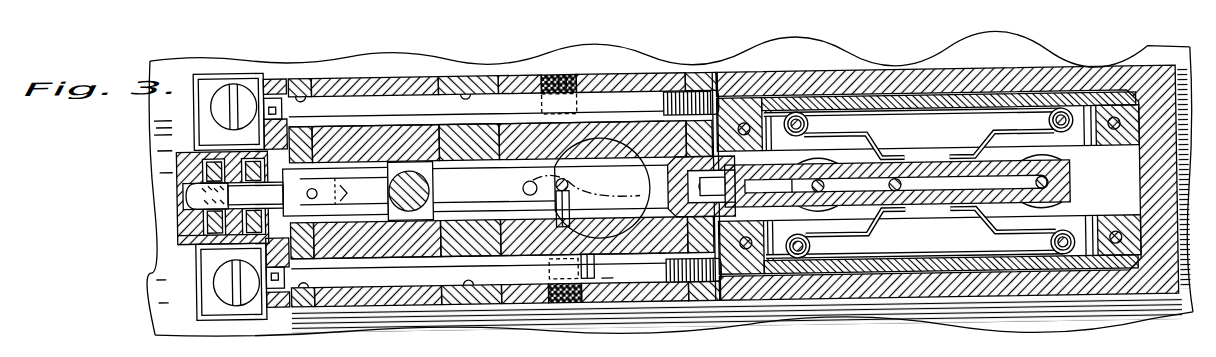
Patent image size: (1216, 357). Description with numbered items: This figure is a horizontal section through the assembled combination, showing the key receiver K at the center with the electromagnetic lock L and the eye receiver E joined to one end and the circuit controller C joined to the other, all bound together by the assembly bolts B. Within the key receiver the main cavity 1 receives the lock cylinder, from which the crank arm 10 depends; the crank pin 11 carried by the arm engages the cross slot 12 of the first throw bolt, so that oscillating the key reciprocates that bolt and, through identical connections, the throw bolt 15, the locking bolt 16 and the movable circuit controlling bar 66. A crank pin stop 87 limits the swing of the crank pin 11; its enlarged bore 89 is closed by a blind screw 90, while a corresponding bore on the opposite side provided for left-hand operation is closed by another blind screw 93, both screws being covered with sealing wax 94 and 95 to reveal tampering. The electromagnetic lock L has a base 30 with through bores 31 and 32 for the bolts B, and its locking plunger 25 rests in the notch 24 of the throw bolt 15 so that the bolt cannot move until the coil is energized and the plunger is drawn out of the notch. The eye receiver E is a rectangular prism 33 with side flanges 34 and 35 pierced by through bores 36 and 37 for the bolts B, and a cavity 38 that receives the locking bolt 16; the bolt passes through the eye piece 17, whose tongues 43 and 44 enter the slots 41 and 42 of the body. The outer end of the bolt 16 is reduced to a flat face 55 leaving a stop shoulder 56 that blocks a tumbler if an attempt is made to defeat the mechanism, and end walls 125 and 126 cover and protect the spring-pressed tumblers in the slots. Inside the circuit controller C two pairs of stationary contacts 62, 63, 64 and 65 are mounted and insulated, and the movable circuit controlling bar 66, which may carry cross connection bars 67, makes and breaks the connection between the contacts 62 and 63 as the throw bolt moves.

The main cavity 1 is at (605, 128).
The crank arm 10 is at (672, 180).
The crank pin 11 is at (527, 188).
The cross slot 12 is at (585, 188).
The throw bolt 15 is at (447, 188).
The throw and locking bolt 16 is at (340, 190).
The eye piece 17 is at (197, 94).
The notch 24 is at (433, 191).
The locking plunger 25 is at (418, 222).
The base 30 is at (366, 78).
The through bore 31 is at (402, 287).
The through bore 32 is at (470, 96).
The rectangular prism body 33 is at (177, 163).
The side flange 34 is at (282, 78).
The side flange 35 is at (262, 322).
The through bore 36 is at (327, 283).
The through bore 37 is at (305, 94).
The cavity 38 is at (193, 193).
The slot 41 is at (182, 240).
The slot 42 is at (255, 233).
The tongue 43 is at (203, 222).
The tongue 44 is at (210, 233).
The flat face 55 is at (210, 160).
The stop shoulder 56 is at (250, 160).
The stationary contact 62 is at (876, 270).
The stationary contact 63 is at (890, 165).
The stationary contact 64 is at (978, 165).
The stationary contact 65 is at (966, 268).
The movable circuit controlling bar 66 is at (1070, 193).
The cross connection bar 67 is at (945, 119).
The crank pin stop 87 is at (606, 302).
The enlarged bore 89 is at (545, 256).
The blind screw 90 is at (612, 306).
The blind screw 93 is at (548, 78).
The sealing wax 94 is at (569, 78).
The sealing wax 95 is at (572, 308).
The end wall 125 is at (203, 76).
The end wall 126 is at (188, 254).
The assembly bolts B is at (400, 107).
The circuit controller C is at (1063, 76).
The eye receiver E is at (195, 258).
The key receiver K is at (665, 77).
The electromagnetic lock L is at (492, 73).